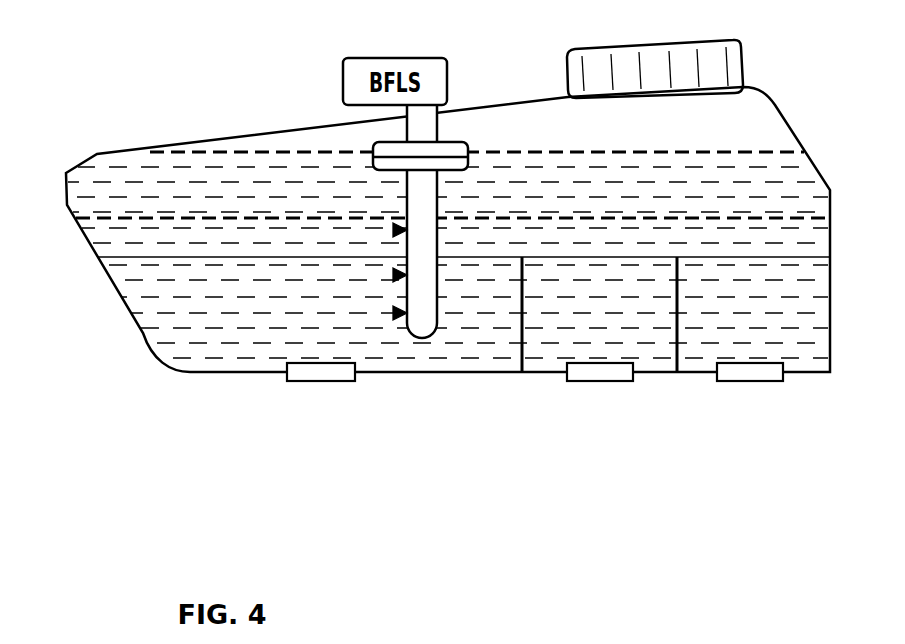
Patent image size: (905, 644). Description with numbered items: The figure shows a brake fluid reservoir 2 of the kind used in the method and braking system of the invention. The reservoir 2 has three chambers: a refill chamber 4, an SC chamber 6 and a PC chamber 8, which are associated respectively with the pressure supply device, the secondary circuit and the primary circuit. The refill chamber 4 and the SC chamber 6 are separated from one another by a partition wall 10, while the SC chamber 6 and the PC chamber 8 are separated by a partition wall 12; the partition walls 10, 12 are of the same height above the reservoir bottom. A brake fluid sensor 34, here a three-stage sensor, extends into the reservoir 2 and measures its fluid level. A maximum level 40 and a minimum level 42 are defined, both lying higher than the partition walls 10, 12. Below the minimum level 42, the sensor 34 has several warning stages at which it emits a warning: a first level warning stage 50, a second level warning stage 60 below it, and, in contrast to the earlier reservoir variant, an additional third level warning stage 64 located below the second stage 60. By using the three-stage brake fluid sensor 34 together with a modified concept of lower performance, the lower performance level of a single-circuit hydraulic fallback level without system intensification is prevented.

The brake fluid reservoir 2 is at (760, 128).
The refill chamber 4 is at (382, 337).
The SC chamber 6 is at (600, 336).
The PC chamber 8 is at (757, 336).
The partition wall 10 is at (523, 337).
The partition wall 12 is at (677, 337).
The brake fluid sensor 34 is at (427, 130).
The maximum level 40 is at (302, 150).
The minimum level 42 is at (261, 217).
The first level warning stage 50 is at (407, 230).
The second level warning stage 60 is at (407, 278).
The third level warning stage 64 is at (407, 315).